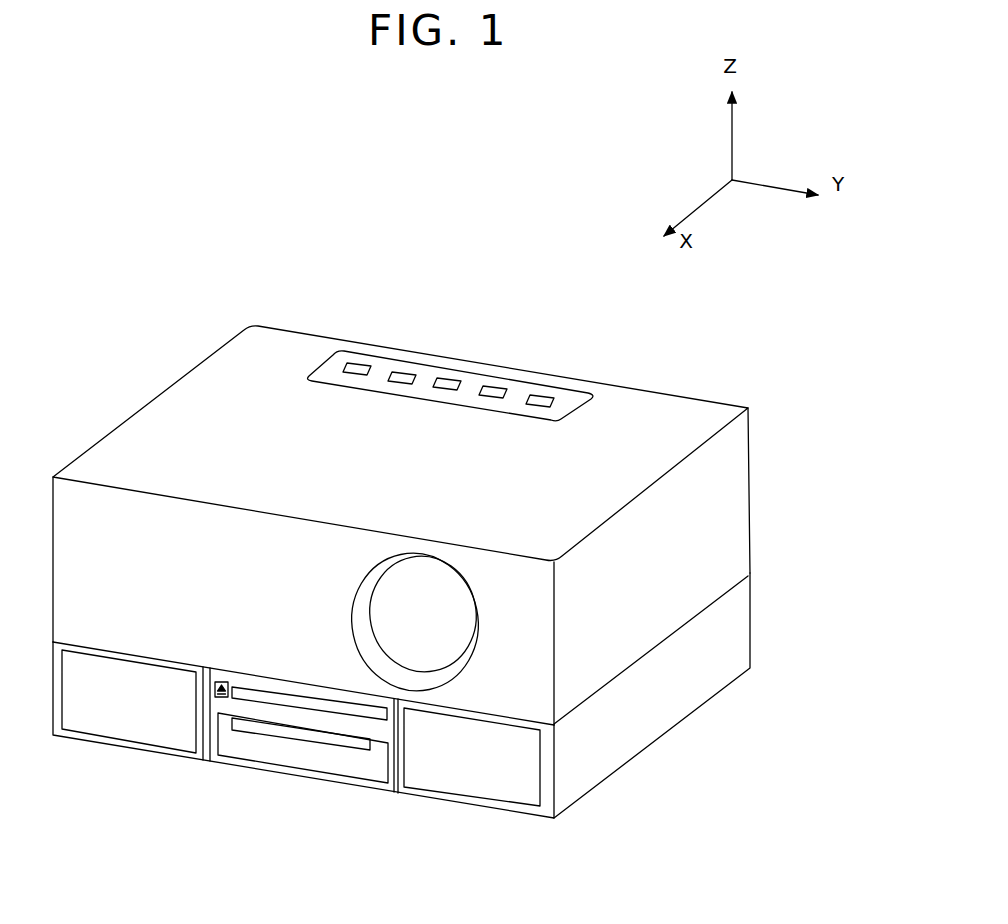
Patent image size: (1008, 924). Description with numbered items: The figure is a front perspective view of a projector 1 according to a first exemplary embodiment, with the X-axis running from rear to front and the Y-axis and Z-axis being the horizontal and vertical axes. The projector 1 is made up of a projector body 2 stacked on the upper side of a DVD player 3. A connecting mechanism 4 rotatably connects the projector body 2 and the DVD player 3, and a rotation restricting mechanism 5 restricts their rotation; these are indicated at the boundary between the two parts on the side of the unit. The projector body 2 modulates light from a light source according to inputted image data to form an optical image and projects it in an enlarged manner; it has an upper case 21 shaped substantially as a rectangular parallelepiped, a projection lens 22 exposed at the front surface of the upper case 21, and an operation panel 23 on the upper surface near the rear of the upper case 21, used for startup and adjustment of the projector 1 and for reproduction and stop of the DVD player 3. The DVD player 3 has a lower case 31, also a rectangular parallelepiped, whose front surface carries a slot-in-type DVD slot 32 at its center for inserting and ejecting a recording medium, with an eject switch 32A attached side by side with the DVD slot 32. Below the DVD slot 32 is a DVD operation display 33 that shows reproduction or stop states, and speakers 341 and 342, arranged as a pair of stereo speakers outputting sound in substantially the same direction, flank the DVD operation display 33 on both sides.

The projector 1 is at (699, 354).
The projector body 2 is at (778, 455).
The DVD player 3 is at (768, 630).
The connecting mechanism 4 is at (446, 635).
The rotation restricting mechanism 5 is at (736, 581).
The upper case 21 is at (730, 518).
The projection lens 22 is at (478, 625).
The operation panel 23 is at (585, 402).
The lower case 31 is at (673, 710).
The DVD slot 32 is at (286, 685).
The eject switch 32A is at (222, 680).
The DVD operation display 33 is at (318, 773).
The speaker 341 is at (115, 728).
The speaker 342 is at (488, 792).